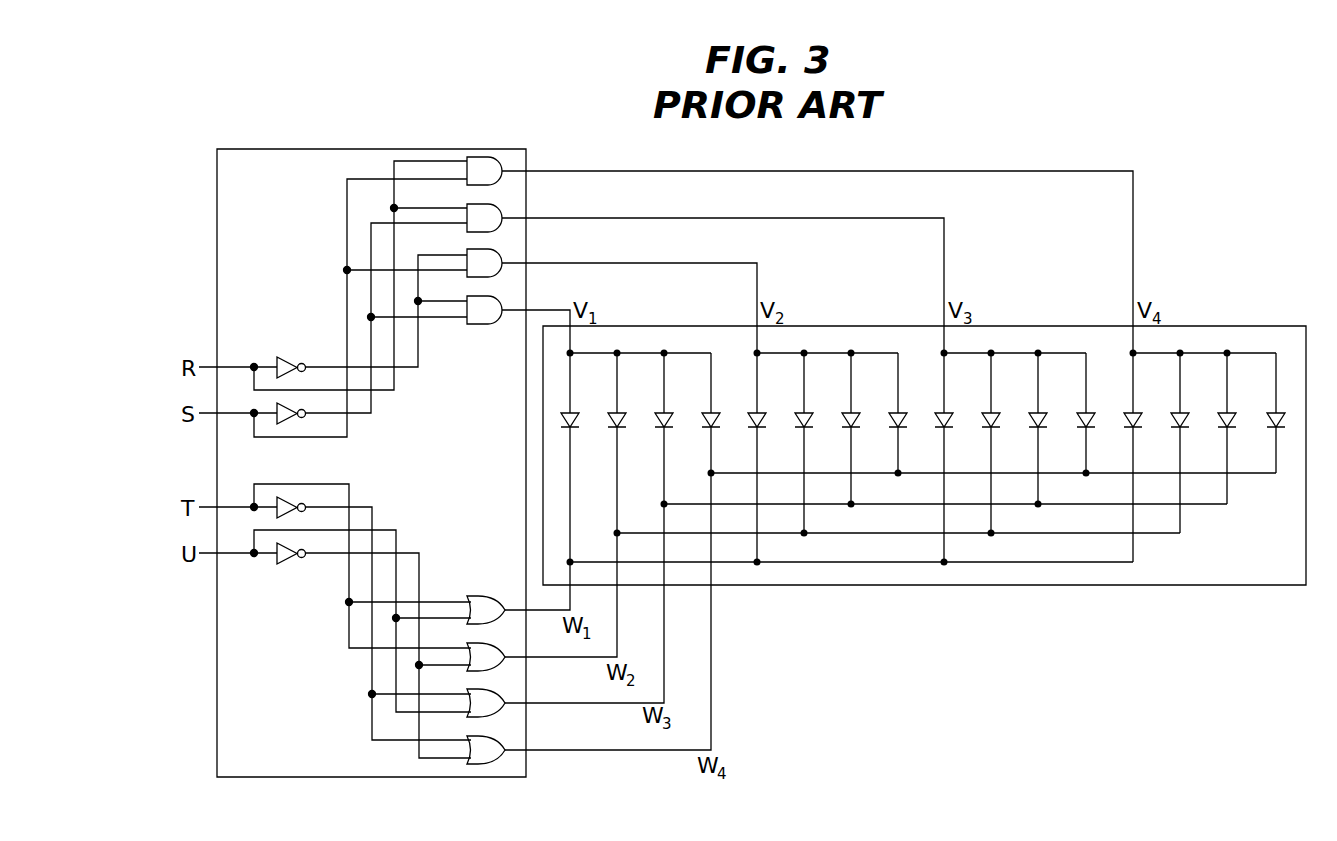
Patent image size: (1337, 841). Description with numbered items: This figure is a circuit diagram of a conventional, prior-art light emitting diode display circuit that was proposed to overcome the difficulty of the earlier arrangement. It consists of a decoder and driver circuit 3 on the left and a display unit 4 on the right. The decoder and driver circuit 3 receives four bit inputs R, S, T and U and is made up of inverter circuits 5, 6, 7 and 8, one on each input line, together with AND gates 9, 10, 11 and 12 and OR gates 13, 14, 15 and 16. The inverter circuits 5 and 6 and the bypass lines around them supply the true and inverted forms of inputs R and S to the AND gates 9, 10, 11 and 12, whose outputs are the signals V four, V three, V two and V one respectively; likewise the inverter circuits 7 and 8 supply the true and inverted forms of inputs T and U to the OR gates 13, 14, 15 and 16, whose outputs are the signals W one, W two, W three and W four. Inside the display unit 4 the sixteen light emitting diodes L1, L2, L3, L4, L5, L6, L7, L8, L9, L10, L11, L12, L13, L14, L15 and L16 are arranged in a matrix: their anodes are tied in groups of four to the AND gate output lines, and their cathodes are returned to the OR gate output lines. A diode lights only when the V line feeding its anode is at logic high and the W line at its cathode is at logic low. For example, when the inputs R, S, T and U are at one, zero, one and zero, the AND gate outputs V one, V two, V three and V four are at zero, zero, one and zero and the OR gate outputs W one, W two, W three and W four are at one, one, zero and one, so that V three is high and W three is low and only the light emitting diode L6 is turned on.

The decoder and driver circuit 3 is at (310, 148).
The display unit 4 is at (1260, 325).
The inverter circuit 5 is at (288, 363).
The inverter circuit 6 is at (290, 420).
The inverter circuit 7 is at (290, 498).
The inverter circuit 8 is at (290, 559).
The AND gate 9 is at (498, 158).
The AND gate 10 is at (501, 206).
The AND gate 11 is at (501, 251).
The AND gate 12 is at (503, 300).
The OR gate 13 is at (487, 598).
The OR gate 14 is at (502, 647).
The OR gate 15 is at (502, 693).
The OR gate 16 is at (502, 740).
The light emitting diode L1 is at (1273, 422).
The light emitting diode L2 is at (1232, 412).
The light emitting diode L3 is at (1185, 412).
The light emitting diode L4 is at (1138, 412).
The light emitting diode L5 is at (1091, 412).
The light emitting diode L6 is at (1043, 412).
The light emitting diode L7 is at (996, 412).
The light emitting diode L8 is at (949, 412).
The light emitting diode L9 is at (903, 412).
The light emitting diode L10 is at (856, 412).
The light emitting diode L11 is at (809, 412).
The light emitting diode L12 is at (762, 412).
The light emitting diode L13 is at (716, 412).
The light emitting diode L14 is at (669, 412).
The light emitting diode L15 is at (622, 412).
The light emitting diode L16 is at (575, 412).